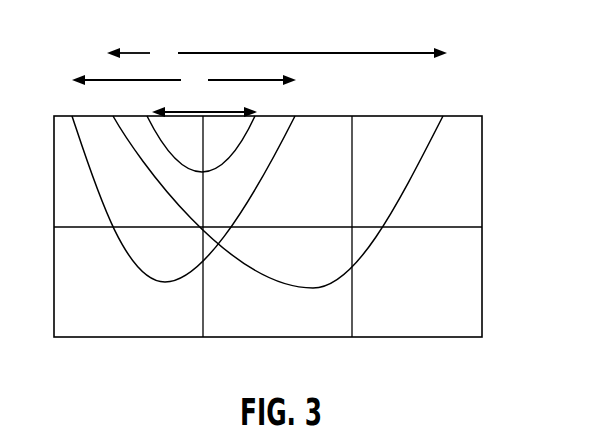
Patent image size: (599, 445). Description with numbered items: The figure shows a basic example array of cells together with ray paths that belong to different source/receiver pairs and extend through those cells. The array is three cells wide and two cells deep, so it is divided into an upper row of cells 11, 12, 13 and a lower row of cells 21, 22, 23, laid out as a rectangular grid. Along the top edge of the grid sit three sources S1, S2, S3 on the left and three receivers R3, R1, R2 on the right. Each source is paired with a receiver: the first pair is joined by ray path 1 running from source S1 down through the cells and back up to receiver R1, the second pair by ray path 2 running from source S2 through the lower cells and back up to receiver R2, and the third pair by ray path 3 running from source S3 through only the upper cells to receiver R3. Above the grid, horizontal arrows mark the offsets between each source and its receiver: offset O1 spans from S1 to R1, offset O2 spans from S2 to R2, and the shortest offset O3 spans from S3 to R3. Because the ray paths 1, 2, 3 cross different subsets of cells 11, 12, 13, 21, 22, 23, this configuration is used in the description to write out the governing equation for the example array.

The ray path 1 is at (183, 199).
The ray path 2 is at (278, 219).
The ray path 3 is at (201, 144).
The cell 11 is at (128, 173).
The cell 12 is at (277, 173).
The cell 13 is at (417, 173).
The cell 21 is at (128, 284).
The cell 22 is at (277, 284).
The cell 23 is at (417, 284).
The first source position S1 is at (64, 104).
The second source position S2 is at (99, 104).
The third source position S3 is at (136, 104).
The first receiver position R1 is at (306, 104).
The second receiver position R2 is at (455, 104).
The third receiver position R3 is at (269, 104).
The first source-receiver offset O1 is at (184, 81).
The second source-receiver offset O2 is at (277, 53).
The third source-receiver offset O3 is at (204, 107).